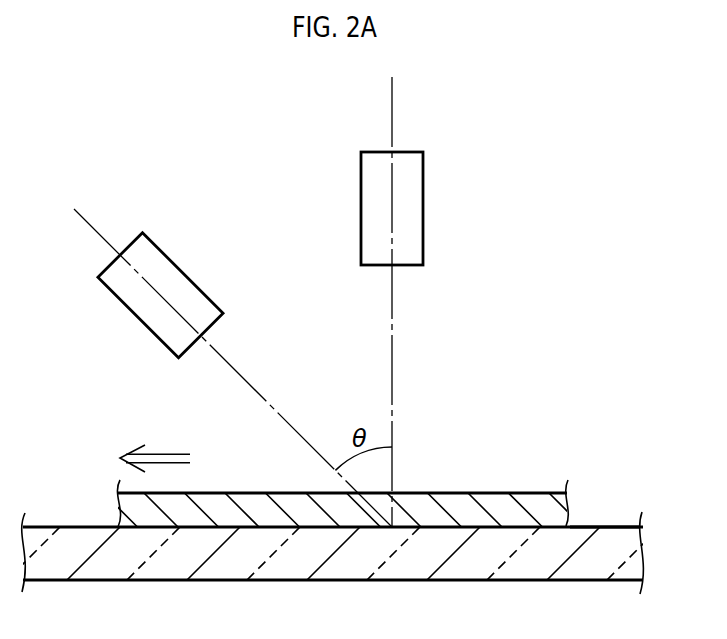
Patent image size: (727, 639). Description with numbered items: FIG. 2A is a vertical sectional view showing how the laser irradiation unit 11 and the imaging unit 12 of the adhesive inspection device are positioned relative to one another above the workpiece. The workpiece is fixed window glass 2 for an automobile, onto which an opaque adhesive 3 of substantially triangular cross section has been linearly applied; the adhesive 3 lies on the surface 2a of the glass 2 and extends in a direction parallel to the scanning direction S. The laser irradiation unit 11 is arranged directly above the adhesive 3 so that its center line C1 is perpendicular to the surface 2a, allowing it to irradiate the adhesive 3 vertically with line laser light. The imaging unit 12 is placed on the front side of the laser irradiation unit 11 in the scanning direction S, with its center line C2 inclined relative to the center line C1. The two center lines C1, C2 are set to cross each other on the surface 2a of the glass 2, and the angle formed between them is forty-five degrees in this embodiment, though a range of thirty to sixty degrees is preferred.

The fixed window glass 2 is at (77, 523).
The surface of the glass 2a is at (615, 525).
The adhesive 3 is at (482, 490).
The laser irradiation unit 11 is at (410, 210).
The imaging unit 12 is at (170, 273).
The center line of the laser irradiation unit C1 is at (393, 320).
The center line of the imaging unit C2 is at (238, 368).
The scanning direction S is at (168, 453).